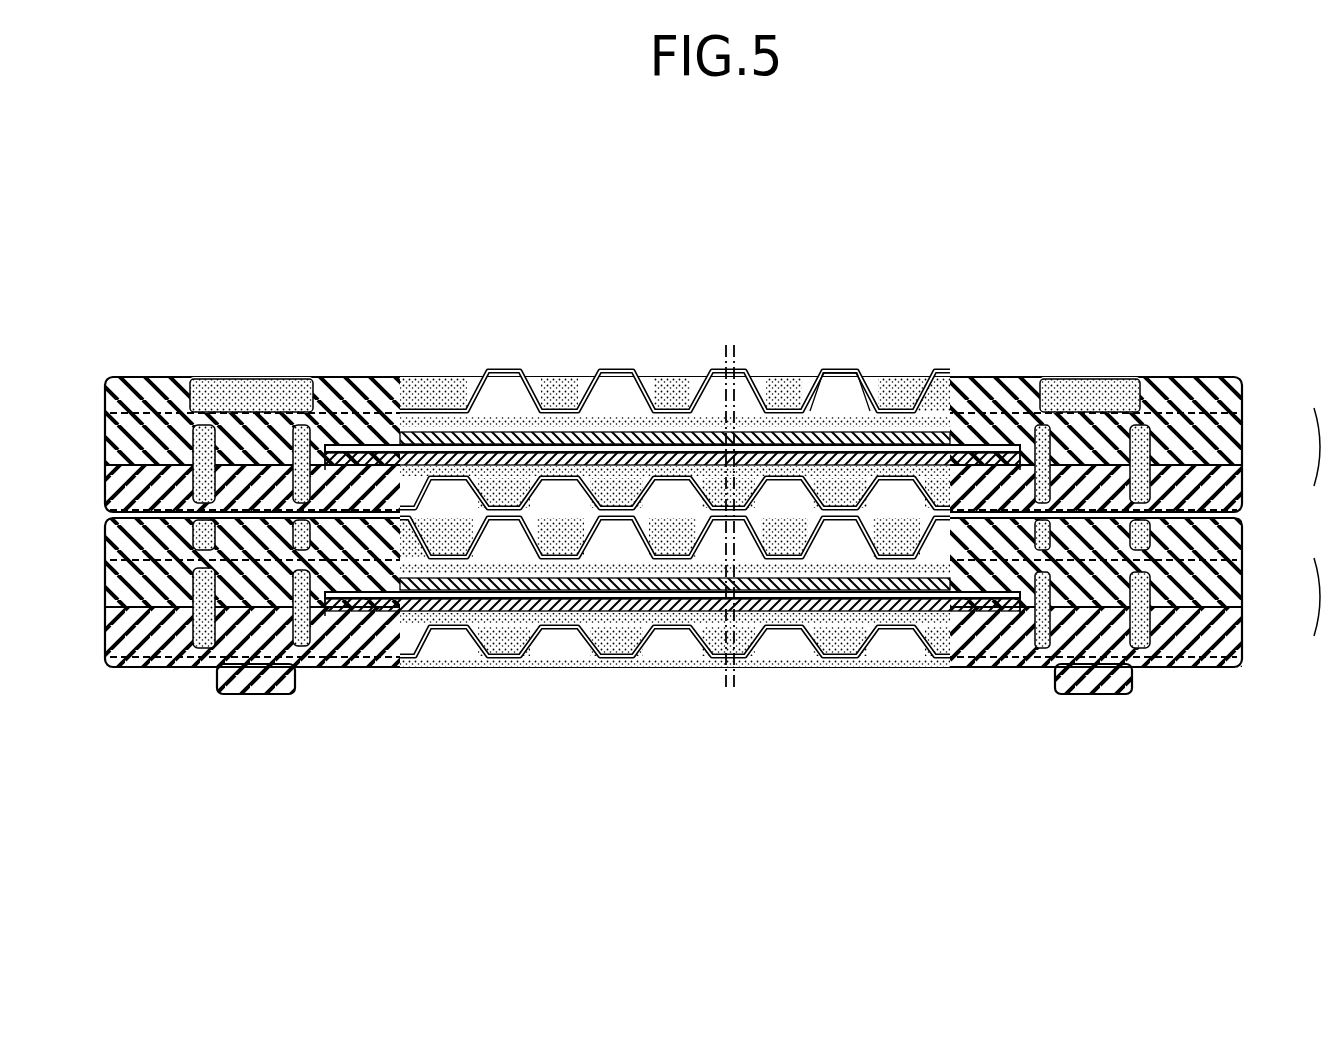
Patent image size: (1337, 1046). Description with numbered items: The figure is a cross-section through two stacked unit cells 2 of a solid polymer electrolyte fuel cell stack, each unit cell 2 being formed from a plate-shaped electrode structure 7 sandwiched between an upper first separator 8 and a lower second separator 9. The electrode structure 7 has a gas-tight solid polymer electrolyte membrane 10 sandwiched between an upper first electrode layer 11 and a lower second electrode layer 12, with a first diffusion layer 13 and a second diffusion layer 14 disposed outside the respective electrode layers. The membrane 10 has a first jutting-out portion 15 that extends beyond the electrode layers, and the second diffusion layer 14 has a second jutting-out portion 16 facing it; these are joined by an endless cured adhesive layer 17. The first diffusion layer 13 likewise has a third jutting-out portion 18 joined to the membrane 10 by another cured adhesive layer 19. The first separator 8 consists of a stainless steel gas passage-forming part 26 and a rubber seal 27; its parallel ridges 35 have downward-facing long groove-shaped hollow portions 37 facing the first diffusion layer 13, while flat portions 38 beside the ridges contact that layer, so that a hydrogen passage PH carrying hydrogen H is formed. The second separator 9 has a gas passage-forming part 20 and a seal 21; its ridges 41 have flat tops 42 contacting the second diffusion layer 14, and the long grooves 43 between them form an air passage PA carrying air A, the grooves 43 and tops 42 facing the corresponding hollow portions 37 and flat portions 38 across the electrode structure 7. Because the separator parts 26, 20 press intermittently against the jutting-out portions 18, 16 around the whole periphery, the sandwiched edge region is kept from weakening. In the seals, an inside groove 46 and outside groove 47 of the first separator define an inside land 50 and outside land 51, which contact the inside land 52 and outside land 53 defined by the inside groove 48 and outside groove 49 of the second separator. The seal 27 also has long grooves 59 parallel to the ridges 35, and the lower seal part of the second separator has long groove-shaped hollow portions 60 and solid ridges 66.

The unit cell 2 is at (721, 522).
The electrode structure 7 is at (836, 412).
The first separator 8 is at (1244, 404).
The second separator 9 is at (1244, 490).
The solid polymer electrolyte membrane 10 is at (650, 402).
The first electrode layer 11 is at (689, 412).
The second electrode layer 12 is at (780, 438).
The first diffusion layer 13 is at (750, 404).
The second diffusion layer 14 is at (762, 478).
The first jutting-out portion 15 is at (984, 400).
The second jutting-out portion 16 is at (948, 505).
The cured adhesive layer 17 is at (1044, 420).
The third jutting-out portion 18 is at (421, 400).
The cured adhesive layer 19 is at (928, 396).
The gas passage-forming part 20 is at (688, 590).
The seal 21 is at (1244, 514).
The gas passage-forming part 26 is at (437, 398).
The seal 27 is at (1246, 378).
The ridge 35 is at (492, 368).
The long groove-shaped hollow portion 37 is at (505, 412).
The flat portion 38 is at (570, 450).
The ridge 41 is at (352, 430).
The top 42 is at (590, 445).
The long groove 43 is at (538, 438).
The inside groove 46 is at (300, 470).
The outside groove 47 is at (207, 437).
The inside groove 48 is at (318, 430).
The outside groove 49 is at (115, 533).
The inside land 50 is at (165, 400).
The outside land 51 is at (120, 438).
The inside land 52 is at (118, 465).
The outside land 53 is at (110, 497).
The long groove 59 is at (233, 378).
The long groove-shaped hollow portion 60 is at (432, 668).
The solid ridge 66 is at (245, 692).
The air A is at (428, 539).
The hydrogen H is at (472, 388).
The air passage PA is at (620, 668).
The hydrogen passage PH is at (612, 386).